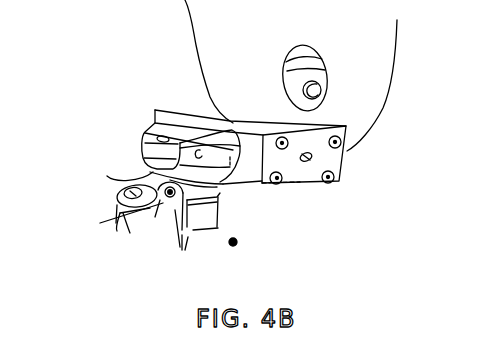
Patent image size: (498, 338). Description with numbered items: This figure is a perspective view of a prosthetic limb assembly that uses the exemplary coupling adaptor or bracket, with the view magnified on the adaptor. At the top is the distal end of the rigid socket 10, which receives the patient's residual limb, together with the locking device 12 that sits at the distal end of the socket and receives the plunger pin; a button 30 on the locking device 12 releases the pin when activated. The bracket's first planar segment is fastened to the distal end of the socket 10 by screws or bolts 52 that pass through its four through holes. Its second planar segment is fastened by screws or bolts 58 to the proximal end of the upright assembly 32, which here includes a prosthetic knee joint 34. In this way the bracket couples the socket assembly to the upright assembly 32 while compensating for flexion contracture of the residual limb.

The socket 10 is at (379, 67).
The locking device 12 is at (288, 82).
The button 30 is at (322, 80).
The upright assembly 32 is at (237, 247).
The prosthetic knee joint 34 is at (100, 223).
The screws or bolts 52 is at (278, 136).
The screws or bolts 58 is at (148, 135).